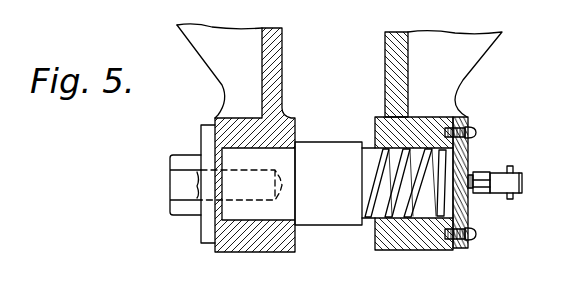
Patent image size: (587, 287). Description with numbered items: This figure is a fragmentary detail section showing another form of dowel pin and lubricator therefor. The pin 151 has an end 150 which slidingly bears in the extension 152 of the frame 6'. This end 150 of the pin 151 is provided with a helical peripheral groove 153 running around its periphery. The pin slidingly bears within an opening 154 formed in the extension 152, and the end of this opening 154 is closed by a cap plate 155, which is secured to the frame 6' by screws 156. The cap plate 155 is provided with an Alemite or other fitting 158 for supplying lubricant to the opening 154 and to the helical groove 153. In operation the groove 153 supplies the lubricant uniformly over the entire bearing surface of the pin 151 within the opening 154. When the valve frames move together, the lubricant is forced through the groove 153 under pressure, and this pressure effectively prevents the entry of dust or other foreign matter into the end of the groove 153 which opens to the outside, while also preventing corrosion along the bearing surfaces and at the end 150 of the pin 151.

The frame 6' is at (454, 74).
The end of the pin 150 is at (370, 153).
The pin 151 is at (338, 212).
The extension of the frame 152 is at (418, 235).
The helical peripheral groove 153 is at (390, 178).
The opening 154 is at (449, 162).
The cap plate 155 is at (468, 207).
The screws 156 is at (474, 131).
The fitting 158 is at (520, 181).